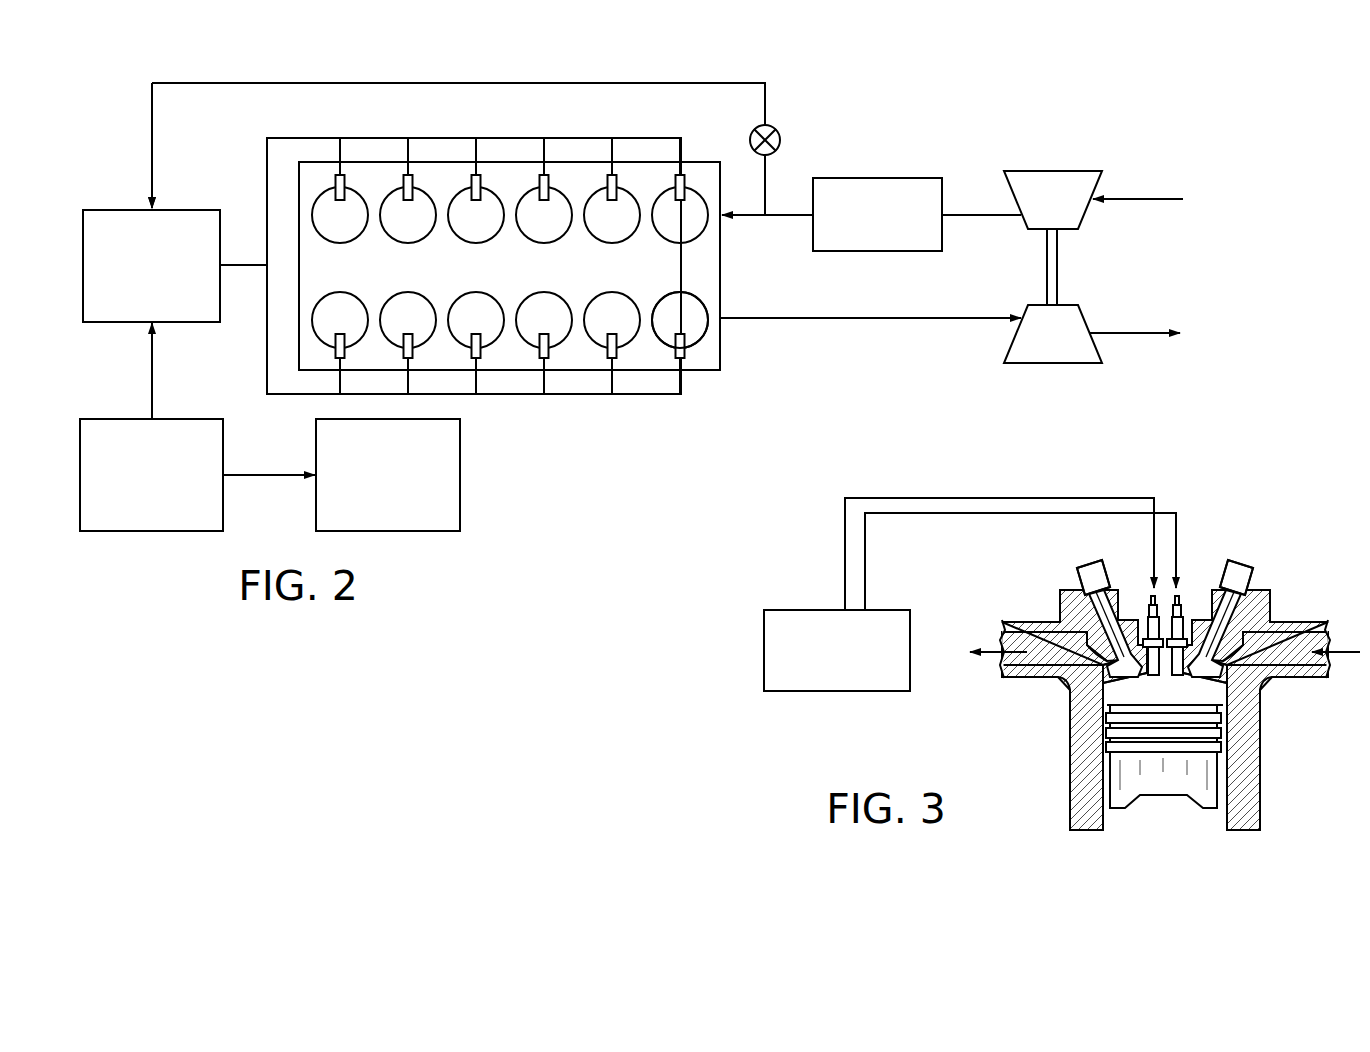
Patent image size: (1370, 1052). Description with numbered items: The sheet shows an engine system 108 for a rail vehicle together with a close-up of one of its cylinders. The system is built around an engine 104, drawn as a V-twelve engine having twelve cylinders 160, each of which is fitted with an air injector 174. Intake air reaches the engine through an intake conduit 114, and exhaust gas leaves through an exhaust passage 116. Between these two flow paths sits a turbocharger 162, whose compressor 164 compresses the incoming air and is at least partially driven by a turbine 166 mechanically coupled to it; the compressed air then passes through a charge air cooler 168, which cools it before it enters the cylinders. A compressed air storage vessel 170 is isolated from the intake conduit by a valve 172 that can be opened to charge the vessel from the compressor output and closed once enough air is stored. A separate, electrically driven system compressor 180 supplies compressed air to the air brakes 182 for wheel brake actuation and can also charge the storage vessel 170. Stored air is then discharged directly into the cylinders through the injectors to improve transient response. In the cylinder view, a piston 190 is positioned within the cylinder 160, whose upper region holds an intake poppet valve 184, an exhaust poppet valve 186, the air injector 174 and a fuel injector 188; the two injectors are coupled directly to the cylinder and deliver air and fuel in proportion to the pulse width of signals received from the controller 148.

In FIG. 2, the engine system 108 is at (838, 52).
In FIG. 2, the engine 104 is at (496, 276).
In FIG. 2, the cylinder 160 is at (707, 329).
In FIG. 3, the cylinder 160 is at (1149, 699).
In FIG. 2, the air injector 174 is at (685, 352).
In FIG. 3, the air injector 174 is at (1152, 608).
In FIG. 2, the compressed air storage vessel 170 is at (136, 288).
In FIG. 2, the valve 172 is at (777, 128).
In FIG. 2, the charge air cooler 168 is at (863, 223).
In FIG. 2, the turbocharger 162 is at (1075, 267).
In FIG. 2, the compressor 164 is at (1038, 207).
In FIG. 2, the turbine 166 is at (1038, 341).
In FIG. 2, the intake conduit 114 is at (1166, 194).
In FIG. 3, the intake conduit 114 is at (1269, 661).
In FIG. 2, the exhaust passage 116 is at (1128, 340).
In FIG. 3, the exhaust passage 116 is at (1038, 661).
In FIG. 2, the system compressor 180 is at (151, 427).
In FIG. 2, the air brakes 182 is at (372, 497).
In FIG. 3, the controller 148 is at (821, 672).
In FIG. 3, the fuel injector 188 is at (1180, 608).
In FIG. 3, the exhaust poppet valve 186 is at (1108, 660).
In FIG. 3, the intake poppet valve 184 is at (1222, 656).
In FIG. 3, the piston 190 is at (1149, 789).